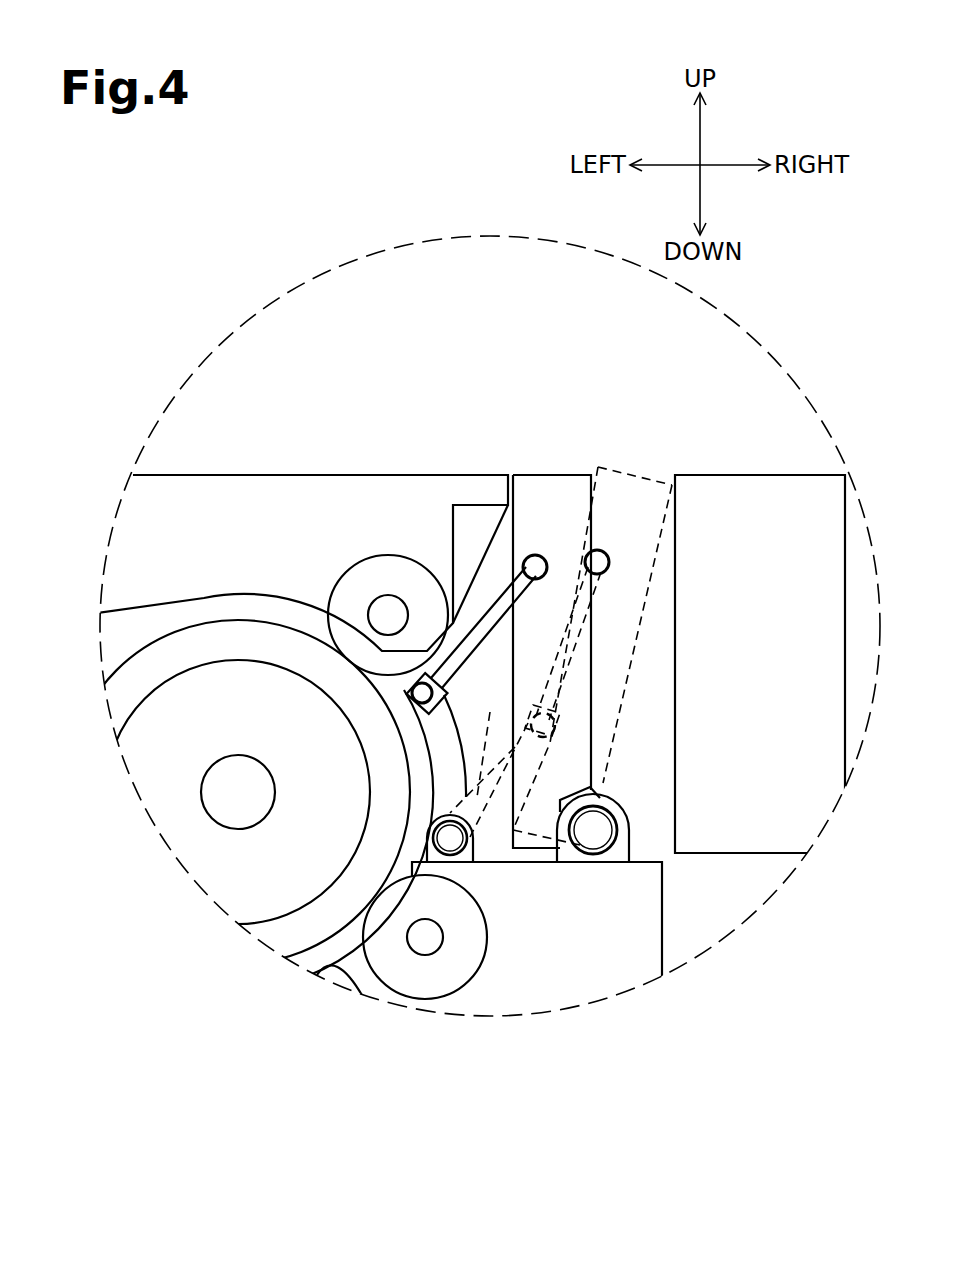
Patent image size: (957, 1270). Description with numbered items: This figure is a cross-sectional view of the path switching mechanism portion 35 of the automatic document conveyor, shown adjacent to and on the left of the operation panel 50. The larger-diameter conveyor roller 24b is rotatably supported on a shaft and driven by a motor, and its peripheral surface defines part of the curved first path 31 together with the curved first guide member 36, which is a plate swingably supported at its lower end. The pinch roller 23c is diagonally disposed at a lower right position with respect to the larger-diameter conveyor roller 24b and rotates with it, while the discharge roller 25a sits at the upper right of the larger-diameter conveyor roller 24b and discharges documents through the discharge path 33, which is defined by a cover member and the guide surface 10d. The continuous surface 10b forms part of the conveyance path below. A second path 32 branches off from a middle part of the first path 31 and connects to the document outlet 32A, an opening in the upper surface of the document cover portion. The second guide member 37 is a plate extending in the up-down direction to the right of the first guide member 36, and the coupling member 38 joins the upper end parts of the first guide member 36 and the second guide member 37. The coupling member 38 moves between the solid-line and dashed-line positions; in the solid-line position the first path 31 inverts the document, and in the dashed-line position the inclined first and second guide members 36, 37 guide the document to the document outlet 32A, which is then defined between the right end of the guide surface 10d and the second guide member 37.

The guide surface 10d is at (145, 538).
The continuous surface 10b is at (623, 963).
The pinch roller 23c is at (463, 963).
The larger-diameter conveyor roller 24b is at (162, 760).
The discharge roller 25a is at (354, 592).
The first path 31 is at (409, 818).
The second path 32 is at (504, 670).
The document outlet 32A is at (537, 494).
The discharge path 33 is at (119, 636).
The path switching mechanism portion 35 is at (654, 509).
The first guide member 36 is at (442, 745).
The second guide member 37 is at (567, 474).
The coupling member 38 is at (493, 613).
The operation panel 50 is at (786, 680).